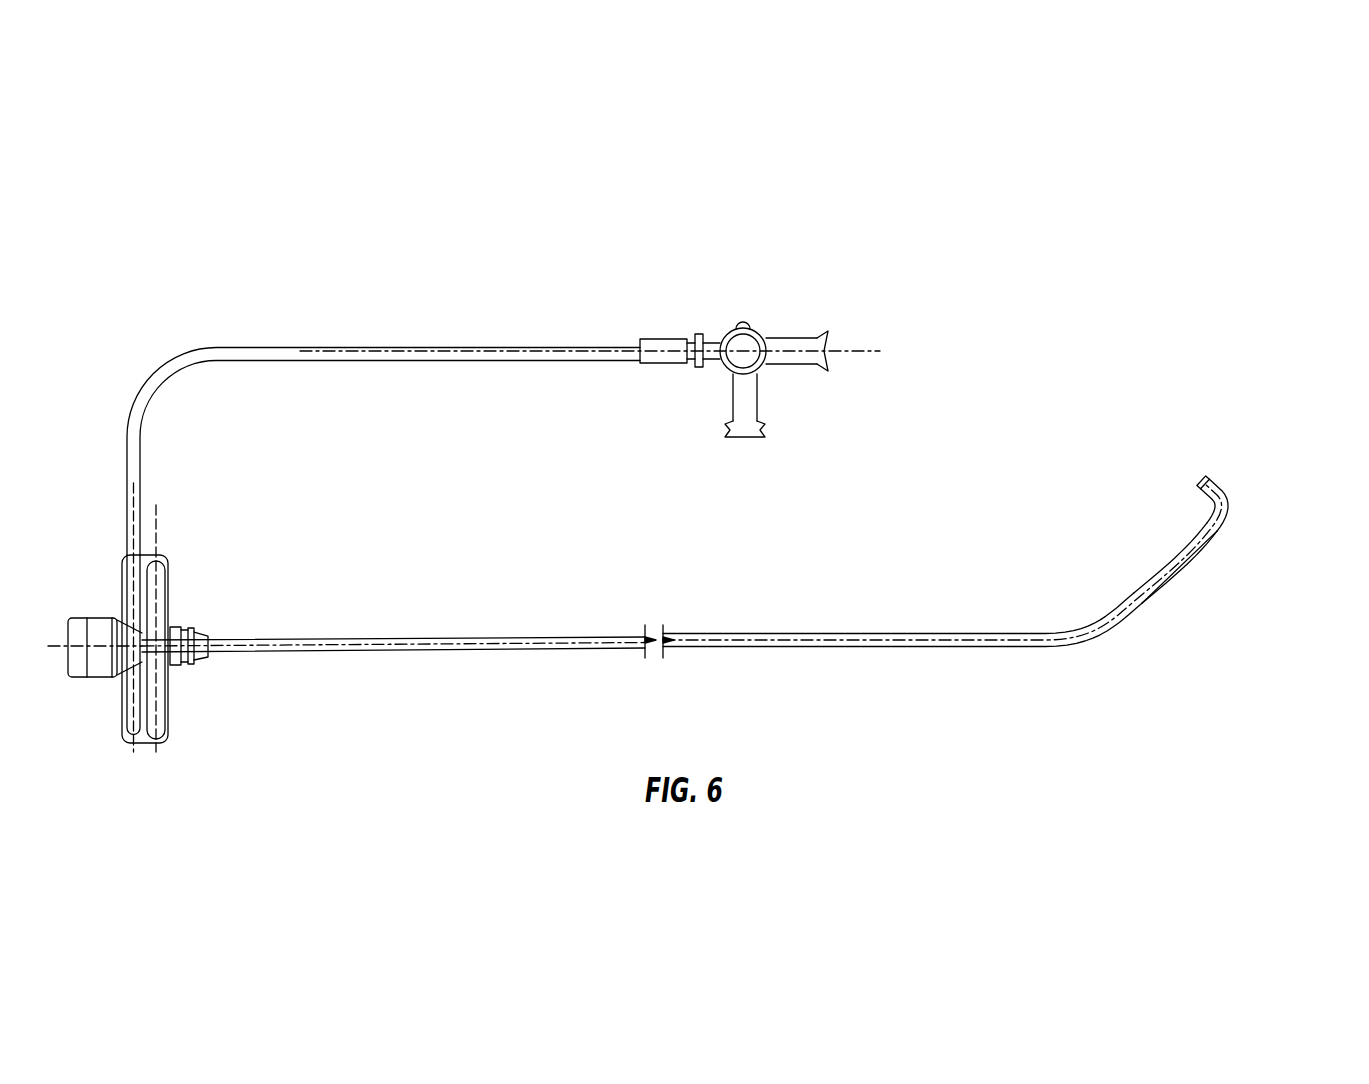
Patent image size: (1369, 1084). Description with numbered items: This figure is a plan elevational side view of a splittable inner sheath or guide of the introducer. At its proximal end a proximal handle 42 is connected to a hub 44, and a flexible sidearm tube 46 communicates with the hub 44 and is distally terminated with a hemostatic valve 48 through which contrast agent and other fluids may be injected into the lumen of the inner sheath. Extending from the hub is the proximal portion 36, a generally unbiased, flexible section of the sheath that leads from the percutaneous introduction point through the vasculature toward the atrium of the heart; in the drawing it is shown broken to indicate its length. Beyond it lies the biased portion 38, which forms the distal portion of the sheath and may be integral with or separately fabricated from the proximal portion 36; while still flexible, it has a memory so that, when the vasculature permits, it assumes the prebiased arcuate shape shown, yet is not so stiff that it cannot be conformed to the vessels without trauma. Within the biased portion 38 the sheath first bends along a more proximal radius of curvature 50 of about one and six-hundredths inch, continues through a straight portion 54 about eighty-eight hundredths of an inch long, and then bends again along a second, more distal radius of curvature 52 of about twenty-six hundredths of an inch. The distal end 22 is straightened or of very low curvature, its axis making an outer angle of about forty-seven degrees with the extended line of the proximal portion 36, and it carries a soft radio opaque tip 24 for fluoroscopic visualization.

The distal end 22 is at (1200, 478).
The soft radio opaque tip 24 is at (1215, 486).
The proximal portion 36 is at (1030, 628).
The biased portion 38 is at (1348, 475).
The proximal handle 42 is at (158, 597).
The hub 44 is at (100, 622).
The flexible sidearm tube 46 is at (310, 349).
The hemostatic valve 48 is at (757, 327).
The proximal radius of curvature 50 is at (965, 648).
The second radius of curvature 52 is at (1232, 531).
The straight portion 54 is at (1220, 548).